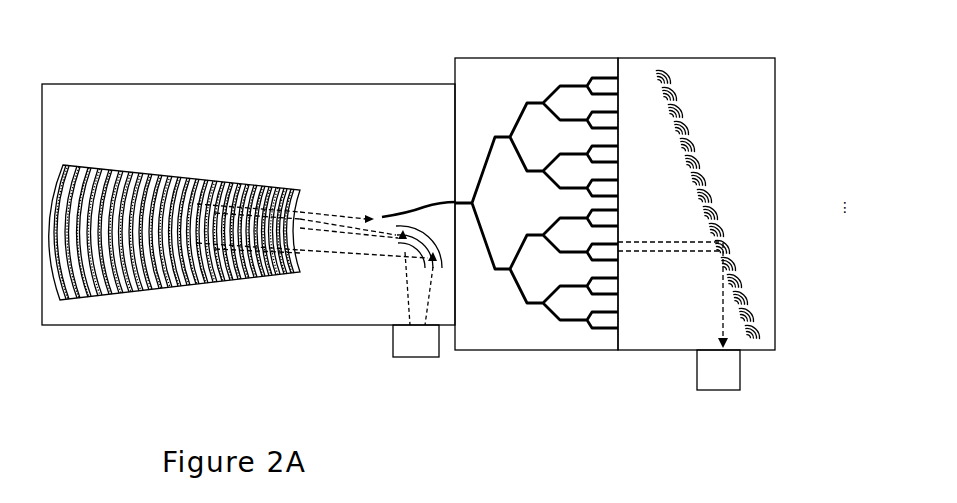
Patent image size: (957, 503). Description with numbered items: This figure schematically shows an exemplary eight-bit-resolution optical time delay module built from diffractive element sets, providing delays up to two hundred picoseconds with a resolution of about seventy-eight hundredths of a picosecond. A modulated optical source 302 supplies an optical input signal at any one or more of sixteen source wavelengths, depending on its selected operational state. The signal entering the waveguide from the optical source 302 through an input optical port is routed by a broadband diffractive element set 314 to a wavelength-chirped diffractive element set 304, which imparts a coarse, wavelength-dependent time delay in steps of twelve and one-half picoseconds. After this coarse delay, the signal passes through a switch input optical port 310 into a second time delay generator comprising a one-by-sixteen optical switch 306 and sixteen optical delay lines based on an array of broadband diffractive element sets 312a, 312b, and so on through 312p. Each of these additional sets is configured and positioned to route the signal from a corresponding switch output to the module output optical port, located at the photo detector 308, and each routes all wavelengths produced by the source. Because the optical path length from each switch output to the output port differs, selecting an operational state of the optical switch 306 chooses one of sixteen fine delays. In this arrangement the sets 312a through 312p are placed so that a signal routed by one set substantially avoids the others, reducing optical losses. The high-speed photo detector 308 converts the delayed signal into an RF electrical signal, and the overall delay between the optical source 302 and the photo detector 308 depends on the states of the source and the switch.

The optical source 302 is at (413, 343).
The wavelength-chirped diffractive element set 304 is at (90, 298).
The 1×16 optical switch 306 is at (547, 257).
The photo detector 308 is at (717, 372).
The switch input optical port 310 is at (385, 217).
The broadband diffractive element set 312a is at (762, 328).
The broadband diffractive element set 312b is at (757, 308).
The broadband diffractive element set 312p is at (673, 78).
The broadband diffractive element set 314 is at (417, 252).